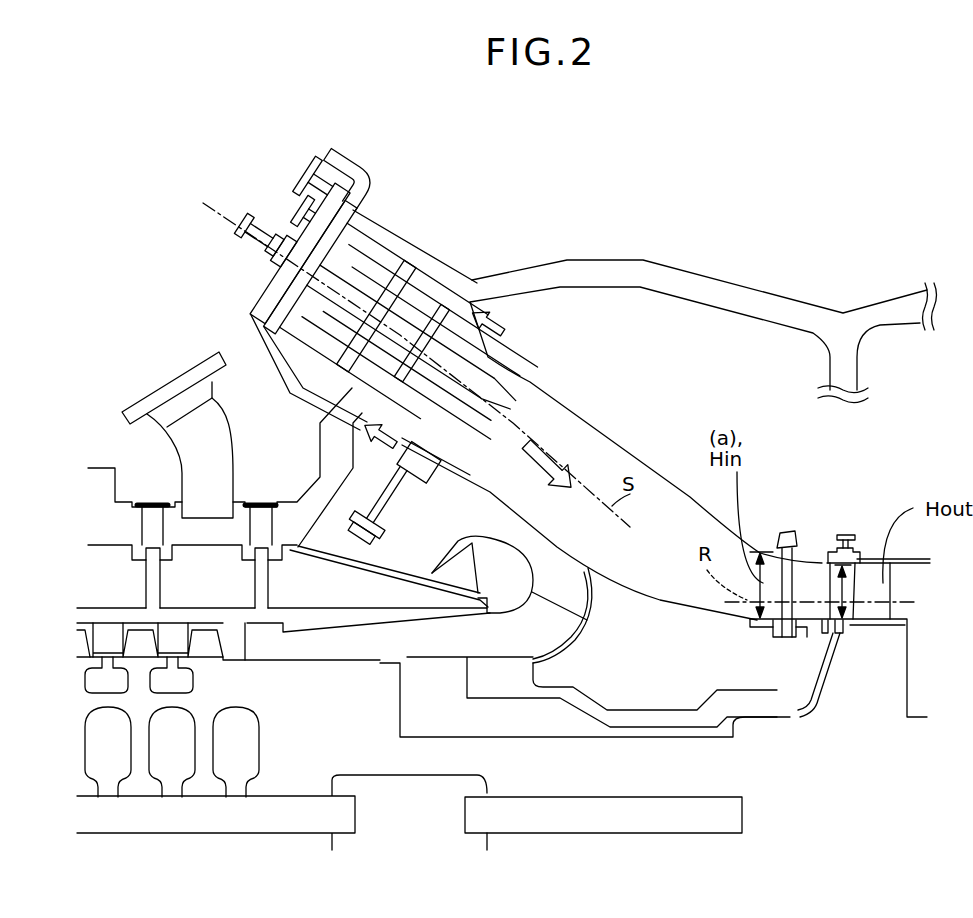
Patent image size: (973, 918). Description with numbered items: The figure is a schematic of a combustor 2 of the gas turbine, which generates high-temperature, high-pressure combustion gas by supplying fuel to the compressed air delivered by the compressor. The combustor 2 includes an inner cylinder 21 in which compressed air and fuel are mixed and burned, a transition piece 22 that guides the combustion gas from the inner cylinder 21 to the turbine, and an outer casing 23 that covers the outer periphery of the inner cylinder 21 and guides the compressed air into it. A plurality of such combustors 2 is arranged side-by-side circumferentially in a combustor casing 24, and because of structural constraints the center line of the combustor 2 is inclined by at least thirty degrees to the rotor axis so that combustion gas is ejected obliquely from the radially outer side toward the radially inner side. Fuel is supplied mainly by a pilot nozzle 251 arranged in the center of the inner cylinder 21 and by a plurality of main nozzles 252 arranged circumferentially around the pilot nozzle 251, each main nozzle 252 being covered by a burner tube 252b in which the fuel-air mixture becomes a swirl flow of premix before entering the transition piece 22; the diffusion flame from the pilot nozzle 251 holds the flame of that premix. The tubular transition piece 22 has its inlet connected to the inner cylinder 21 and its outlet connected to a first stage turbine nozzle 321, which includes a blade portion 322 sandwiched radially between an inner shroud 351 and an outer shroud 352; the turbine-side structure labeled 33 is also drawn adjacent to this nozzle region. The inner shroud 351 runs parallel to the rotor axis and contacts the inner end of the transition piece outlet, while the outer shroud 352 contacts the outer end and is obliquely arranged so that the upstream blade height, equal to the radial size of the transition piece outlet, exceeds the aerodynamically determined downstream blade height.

The combustor 2 is at (212, 280).
The inner cylinder 21 is at (423, 285).
The transition piece 22 is at (567, 403).
The outer casing 23 is at (247, 340).
The combustor casing 24 is at (607, 260).
The pilot nozzle 251 is at (472, 280).
The main nozzle 252 is at (368, 285).
The burner tube 252b is at (500, 347).
The first stage turbine nozzle 321 is at (813, 553).
The blade portion 322 is at (817, 583).
The turbine casing 33 is at (887, 583).
The inner shroud 351 is at (797, 650).
The outer shroud 352 is at (800, 547).